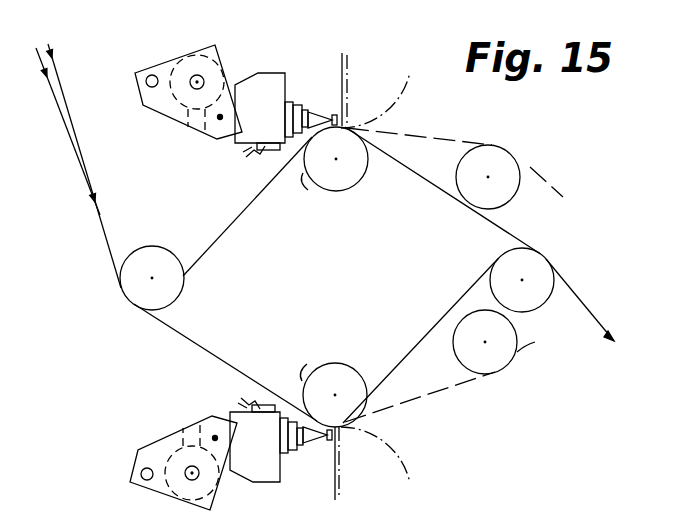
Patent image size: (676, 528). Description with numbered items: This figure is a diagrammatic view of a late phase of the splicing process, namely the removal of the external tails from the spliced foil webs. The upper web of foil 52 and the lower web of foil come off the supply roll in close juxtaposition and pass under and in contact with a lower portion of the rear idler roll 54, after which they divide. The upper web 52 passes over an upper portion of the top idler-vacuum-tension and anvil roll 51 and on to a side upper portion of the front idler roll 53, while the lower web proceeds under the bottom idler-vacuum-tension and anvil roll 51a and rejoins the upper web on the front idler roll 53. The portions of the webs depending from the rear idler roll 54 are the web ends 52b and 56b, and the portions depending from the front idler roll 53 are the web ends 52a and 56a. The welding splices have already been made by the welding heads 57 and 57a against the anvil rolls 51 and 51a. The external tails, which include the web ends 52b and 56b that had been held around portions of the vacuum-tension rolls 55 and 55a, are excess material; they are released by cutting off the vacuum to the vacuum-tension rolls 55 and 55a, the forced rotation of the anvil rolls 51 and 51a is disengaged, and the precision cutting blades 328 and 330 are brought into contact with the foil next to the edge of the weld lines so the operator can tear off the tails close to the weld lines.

The top idler-vacuum-tension and anvil roll 51 is at (337, 182).
The bottom idler-vacuum-tension and anvil roll 51a is at (337, 377).
The upper web of foil 52 is at (78, 166).
The web end 52a is at (443, 193).
The web end 52b is at (240, 210).
The front idler roll 53 is at (538, 272).
The rear idler roll 54 is at (163, 257).
The vacuum-tension roll 55 is at (502, 163).
The vacuum-tension roll 55a is at (487, 358).
The web end 56a is at (423, 342).
The web end 56b is at (210, 350).
The welding head 57 is at (260, 70).
The welding head 57a is at (222, 405).
The precision cutting blade 328 is at (349, 72).
The precision cutting blade 330 is at (340, 453).